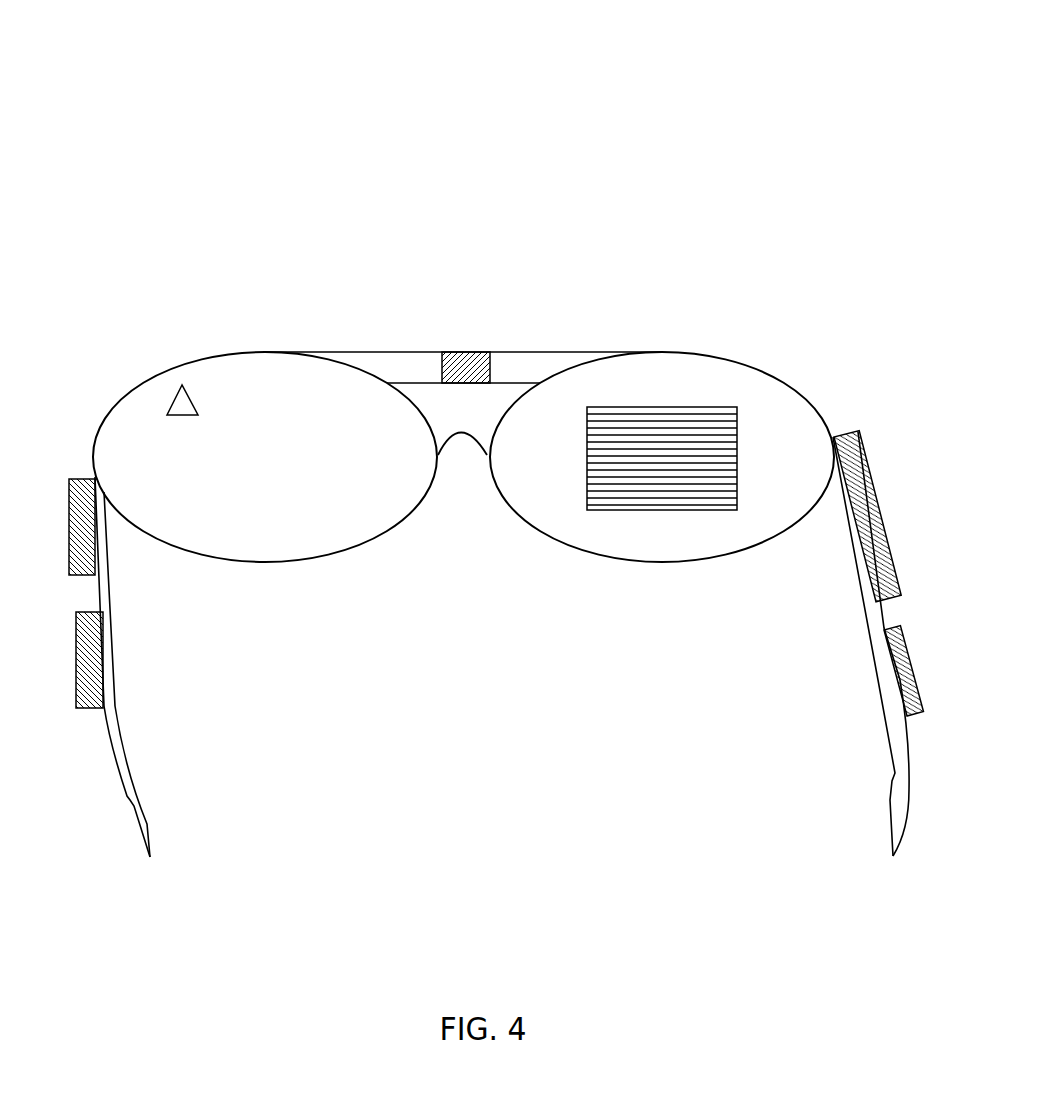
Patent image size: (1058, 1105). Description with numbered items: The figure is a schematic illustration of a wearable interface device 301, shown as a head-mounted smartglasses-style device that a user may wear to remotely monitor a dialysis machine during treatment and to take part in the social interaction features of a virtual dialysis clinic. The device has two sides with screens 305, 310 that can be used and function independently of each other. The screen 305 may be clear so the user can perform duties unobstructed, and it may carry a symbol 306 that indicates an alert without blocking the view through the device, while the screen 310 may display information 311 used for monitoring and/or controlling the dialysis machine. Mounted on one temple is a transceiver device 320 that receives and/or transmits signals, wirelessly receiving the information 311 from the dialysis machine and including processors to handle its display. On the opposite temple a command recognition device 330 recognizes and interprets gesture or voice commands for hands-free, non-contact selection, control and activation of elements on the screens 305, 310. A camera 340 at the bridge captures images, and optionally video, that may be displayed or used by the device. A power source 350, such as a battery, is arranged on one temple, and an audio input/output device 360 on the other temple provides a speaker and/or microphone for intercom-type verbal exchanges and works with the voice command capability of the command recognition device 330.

The wearable interface device 301 is at (690, 162).
The screen 305 is at (280, 386).
The symbol 306 is at (187, 393).
The screen 310 is at (678, 386).
The information 311 is at (705, 407).
The transceiver device 320 is at (872, 477).
The command recognition device 330 is at (84, 479).
The camera 340 is at (465, 352).
The power source 350 is at (93, 709).
The audio input/output device 360 is at (915, 676).